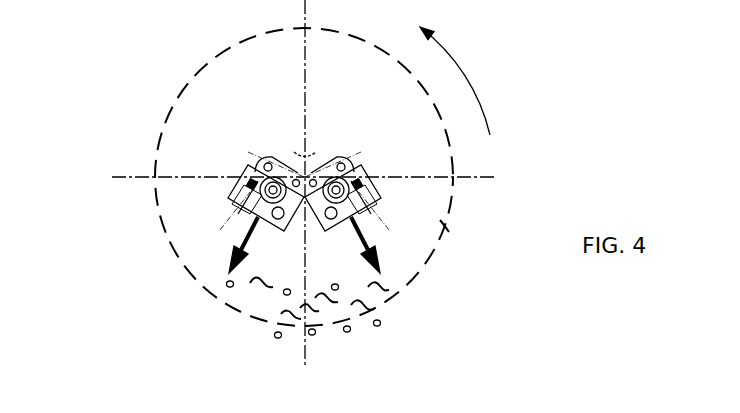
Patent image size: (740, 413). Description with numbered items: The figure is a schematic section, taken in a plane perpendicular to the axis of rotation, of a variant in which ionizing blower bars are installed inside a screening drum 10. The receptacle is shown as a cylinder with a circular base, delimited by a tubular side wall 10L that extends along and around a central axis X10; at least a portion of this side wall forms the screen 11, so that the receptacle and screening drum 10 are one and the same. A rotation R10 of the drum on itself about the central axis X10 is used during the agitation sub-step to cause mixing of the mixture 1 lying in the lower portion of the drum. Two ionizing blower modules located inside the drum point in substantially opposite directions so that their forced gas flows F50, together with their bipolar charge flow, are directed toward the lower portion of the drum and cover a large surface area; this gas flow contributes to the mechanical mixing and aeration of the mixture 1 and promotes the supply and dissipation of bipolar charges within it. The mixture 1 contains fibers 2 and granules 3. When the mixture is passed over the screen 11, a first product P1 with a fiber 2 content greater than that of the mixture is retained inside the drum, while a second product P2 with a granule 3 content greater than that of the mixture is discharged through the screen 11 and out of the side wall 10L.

The mixture 1 is at (255, 299).
The fibers 2 is at (387, 288).
The granules 3 is at (382, 324).
The first product P1 is at (272, 314).
The second product P2 is at (272, 345).
The central axis X10 is at (303, 175).
The rotation R10 is at (471, 81).
The forced gas flow F50 is at (249, 234).
The tubular side wall 10L is at (452, 228).
The screening drum 10 is at (364, 177).
The screen 11 is at (437, 253).